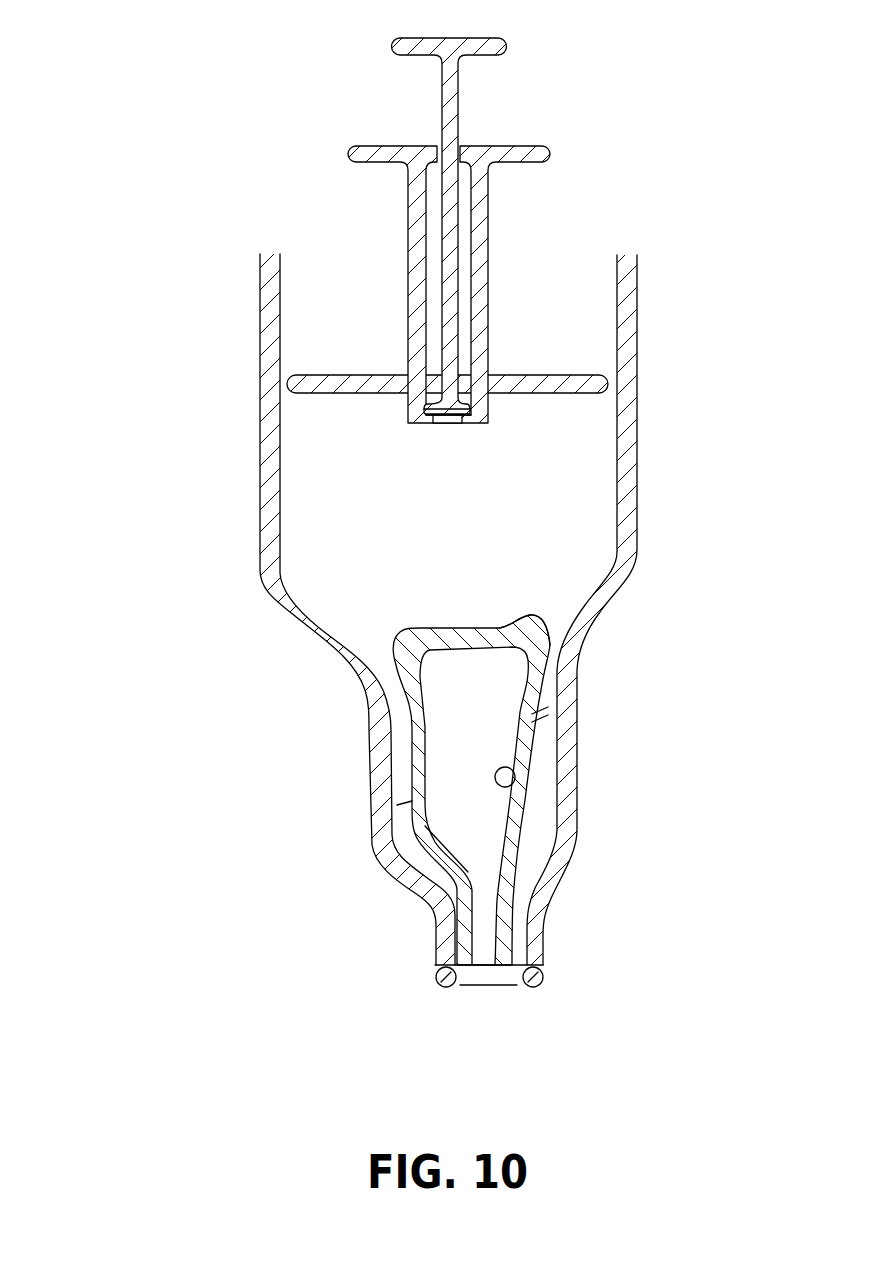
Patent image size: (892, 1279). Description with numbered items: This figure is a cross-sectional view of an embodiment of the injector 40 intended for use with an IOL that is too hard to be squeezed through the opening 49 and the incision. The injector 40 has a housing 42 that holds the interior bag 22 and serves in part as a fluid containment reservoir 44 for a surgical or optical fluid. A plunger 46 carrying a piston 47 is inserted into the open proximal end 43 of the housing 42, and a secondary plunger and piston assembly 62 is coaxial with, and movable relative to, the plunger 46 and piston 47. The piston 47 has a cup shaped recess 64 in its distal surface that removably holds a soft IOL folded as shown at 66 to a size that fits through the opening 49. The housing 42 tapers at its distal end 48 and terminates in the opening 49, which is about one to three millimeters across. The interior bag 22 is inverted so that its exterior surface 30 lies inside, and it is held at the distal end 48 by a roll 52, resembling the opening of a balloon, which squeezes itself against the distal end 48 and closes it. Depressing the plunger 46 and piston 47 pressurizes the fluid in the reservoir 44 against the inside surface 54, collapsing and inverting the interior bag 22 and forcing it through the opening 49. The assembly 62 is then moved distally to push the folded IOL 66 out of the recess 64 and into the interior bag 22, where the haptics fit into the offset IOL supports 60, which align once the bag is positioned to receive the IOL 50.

The injector 40 is at (160, 343).
The housing 42 is at (637, 297).
The open proximal end 43 is at (330, 265).
The fluid containment reservoir 44 is at (578, 413).
The plunger 46 is at (489, 192).
The piston 47 is at (553, 375).
The distal end 48 is at (543, 932).
The opening 49 is at (488, 988).
The refractive device 50 is at (470, 438).
The roll 52 is at (545, 974).
The inside surface 54 is at (500, 630).
The interior bag 22 is at (540, 637).
The exterior surface 30 is at (510, 787).
The IOL supports 60 is at (410, 810).
The secondary plunger and piston assembly 62 is at (458, 92).
The cup shaped recess 64 is at (407, 410).
The folded IOL 66 is at (452, 418).